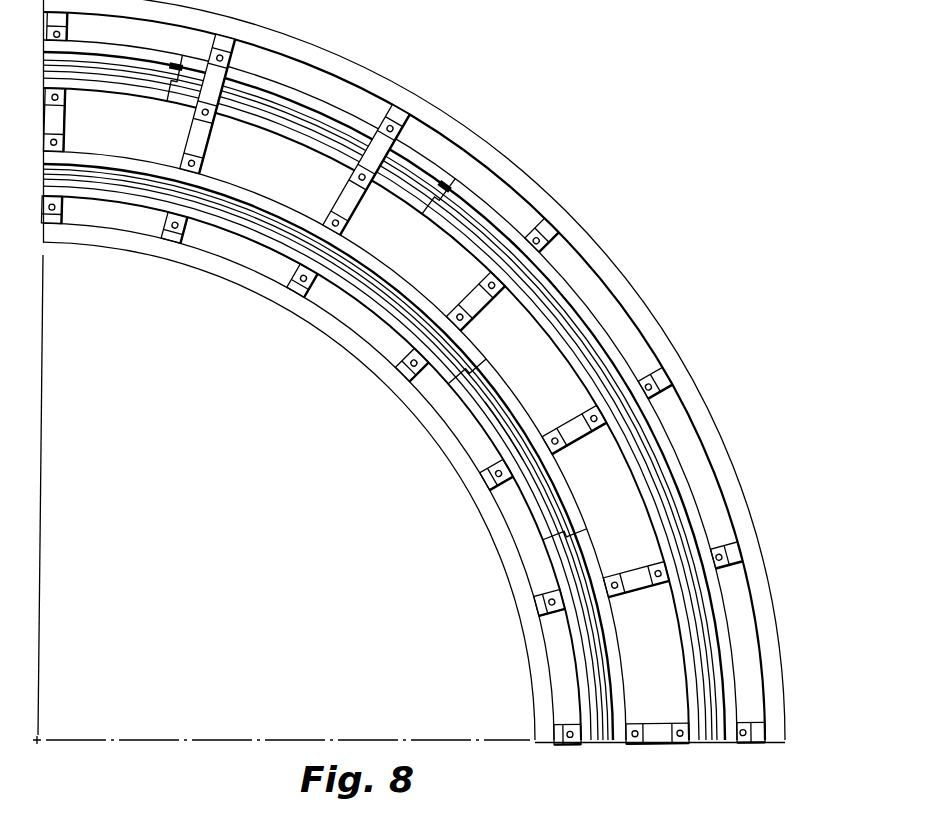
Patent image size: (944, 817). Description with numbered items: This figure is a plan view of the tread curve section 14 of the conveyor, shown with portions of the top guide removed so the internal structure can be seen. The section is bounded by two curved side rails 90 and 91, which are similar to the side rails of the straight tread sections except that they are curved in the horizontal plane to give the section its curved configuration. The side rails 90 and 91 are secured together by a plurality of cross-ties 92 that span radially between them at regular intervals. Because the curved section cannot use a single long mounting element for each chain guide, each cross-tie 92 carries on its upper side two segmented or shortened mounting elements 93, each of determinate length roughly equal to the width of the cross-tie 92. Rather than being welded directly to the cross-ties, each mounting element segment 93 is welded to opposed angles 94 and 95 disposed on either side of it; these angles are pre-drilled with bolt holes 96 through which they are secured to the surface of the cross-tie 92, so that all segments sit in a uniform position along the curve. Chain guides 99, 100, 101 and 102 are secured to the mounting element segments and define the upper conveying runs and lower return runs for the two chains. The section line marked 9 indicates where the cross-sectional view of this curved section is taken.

The tread curve section 14 is at (297, 608).
The curved side rail 90 is at (327, 326).
The curved side rail 91 is at (600, 251).
The cross-tie 92 is at (205, 140).
The segmented mounting element 93 is at (368, 152).
The mounting angle 94 is at (430, 369).
The mounting angle 95 is at (466, 329).
The bolt hole 96 is at (496, 475).
The chain guide 99 is at (259, 246).
The chain guide 100 is at (502, 216).
The chain guide 101 is at (493, 419).
The chain guide 102 is at (441, 185).
The section line 9- 9 is at (750, 567).